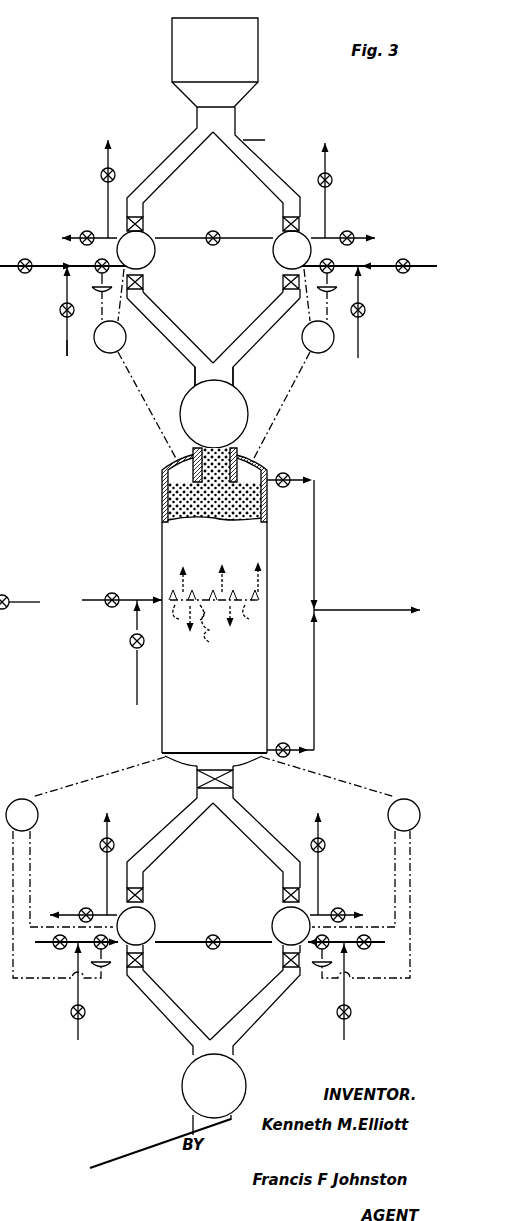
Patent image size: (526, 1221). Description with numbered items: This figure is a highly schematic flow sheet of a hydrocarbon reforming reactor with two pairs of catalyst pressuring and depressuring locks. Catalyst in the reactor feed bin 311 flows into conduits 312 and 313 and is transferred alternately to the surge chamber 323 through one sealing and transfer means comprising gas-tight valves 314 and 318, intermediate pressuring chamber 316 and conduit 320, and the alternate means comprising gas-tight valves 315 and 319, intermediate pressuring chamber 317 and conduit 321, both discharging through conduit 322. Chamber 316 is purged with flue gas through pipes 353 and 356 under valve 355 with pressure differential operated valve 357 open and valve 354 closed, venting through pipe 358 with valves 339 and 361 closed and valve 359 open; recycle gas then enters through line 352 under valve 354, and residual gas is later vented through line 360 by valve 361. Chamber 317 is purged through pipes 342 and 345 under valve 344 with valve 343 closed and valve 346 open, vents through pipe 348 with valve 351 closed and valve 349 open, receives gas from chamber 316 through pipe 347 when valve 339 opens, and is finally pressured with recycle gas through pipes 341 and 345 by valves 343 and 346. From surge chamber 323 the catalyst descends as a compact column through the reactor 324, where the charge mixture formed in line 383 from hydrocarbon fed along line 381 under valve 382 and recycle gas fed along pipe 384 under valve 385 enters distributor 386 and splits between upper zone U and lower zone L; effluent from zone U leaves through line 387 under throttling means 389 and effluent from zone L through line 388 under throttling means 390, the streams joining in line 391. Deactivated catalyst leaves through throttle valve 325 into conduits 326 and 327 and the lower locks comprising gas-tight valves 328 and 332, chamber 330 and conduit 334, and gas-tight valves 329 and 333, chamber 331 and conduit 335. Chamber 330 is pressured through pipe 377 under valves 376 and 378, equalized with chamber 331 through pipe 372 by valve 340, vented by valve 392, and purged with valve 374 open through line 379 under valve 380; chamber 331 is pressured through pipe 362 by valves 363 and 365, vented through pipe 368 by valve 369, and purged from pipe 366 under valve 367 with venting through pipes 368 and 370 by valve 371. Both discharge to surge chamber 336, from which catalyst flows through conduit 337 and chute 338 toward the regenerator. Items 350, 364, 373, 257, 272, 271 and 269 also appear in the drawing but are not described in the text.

The reactor feed bin 311 is at (215, 62).
The conduit 312 is at (184, 145).
The conduit 313 is at (256, 162).
The gas-tight valve 314 is at (147, 223).
The gas-tight valve 315 is at (283, 225).
The intermediate pressuring chamber 316 is at (136, 250).
The intermediate pressuring chamber 317 is at (292, 250).
The gas-tight valve 318 is at (146, 284).
The gas-tight valve 319 is at (283, 285).
The conduit 320 is at (158, 318).
The conduit 321 is at (270, 320).
The conduit 322 is at (234, 378).
The surge chamber 323 is at (214, 414).
The reactor 324 is at (160, 548).
The throttle valve 325 is at (234, 782).
The conduit 326 is at (172, 820).
The conduit 327 is at (256, 819).
The gas-tight valve 328 is at (146, 896).
The gas-tight valve 329 is at (283, 897).
The intermediate pressuring chamber 330 is at (136, 926).
The intermediate pressuring chamber 331 is at (291, 926).
The gas-tight valve 332 is at (146, 962).
The gas-tight valve 333 is at (283, 962).
The conduit 334 is at (159, 999).
The conduit 335 is at (265, 1001).
The surge chamber 336 is at (214, 1086).
The conduit 337 is at (192, 1117).
The chute 338 is at (121, 1155).
The valve 339 is at (218, 231).
The valve 340 is at (220, 935).
The pipe 341 is at (418, 270).
The pipe 342 is at (362, 340).
The valve 343 is at (406, 260).
The valve 344 is at (366, 310).
The pipe 345 is at (348, 264).
The valve 346 is at (356, 280).
The pipe 347 is at (200, 240).
The pipe 348 is at (364, 236).
The valve 349 is at (348, 230).
The vent line 350 is at (328, 194).
The valve 351 is at (332, 174).
The line 352 is at (63, 281).
The pipe 353 is at (66, 342).
The valve 354 is at (26, 258).
The valve 355 is at (60, 312).
The pipe 356 is at (72, 262).
The pressure differential operated valve 357 is at (96, 271).
The pipe 358 is at (74, 231).
The valve 359 is at (88, 230).
The line 360 is at (110, 156).
The valve 361 is at (100, 173).
The pipe 362 is at (385, 944).
The valve 363 is at (365, 948).
The differential pressure controller lines 364 is at (332, 942).
The valve 365 is at (313, 950).
The pipe 366 is at (346, 1033).
The valve 367 is at (353, 1012).
The pipe 368 is at (310, 918).
The valve 369 is at (340, 908).
The pipe 370 is at (322, 863).
The valve 371 is at (326, 843).
The pipe 372 is at (200, 947).
The line 373 is at (75, 1033).
The valve 374 is at (70, 1013).
The valve 376 is at (57, 948).
The pipe 377 is at (121, 963).
The valve 378 is at (98, 948).
The line 379 is at (70, 908).
The valve 380 is at (88, 908).
The line 381 is at (100, 597).
The valve 382 is at (118, 597).
The line 383 is at (127, 607).
The pipe 384 is at (135, 683).
The valve 385 is at (130, 645).
The distributor 386 is at (206, 623).
The line 387 is at (300, 478).
The line 388 is at (318, 665).
The throttling means 389 is at (290, 475).
The throttling means 390 is at (290, 761).
The line 391 is at (352, 610).
The valve 392 is at (100, 843).
The valve 257 is at (30, 612).
The line 272 is at (10, 590).
The line 271 is at (13, 663).
The line 269 is at (14, 697).